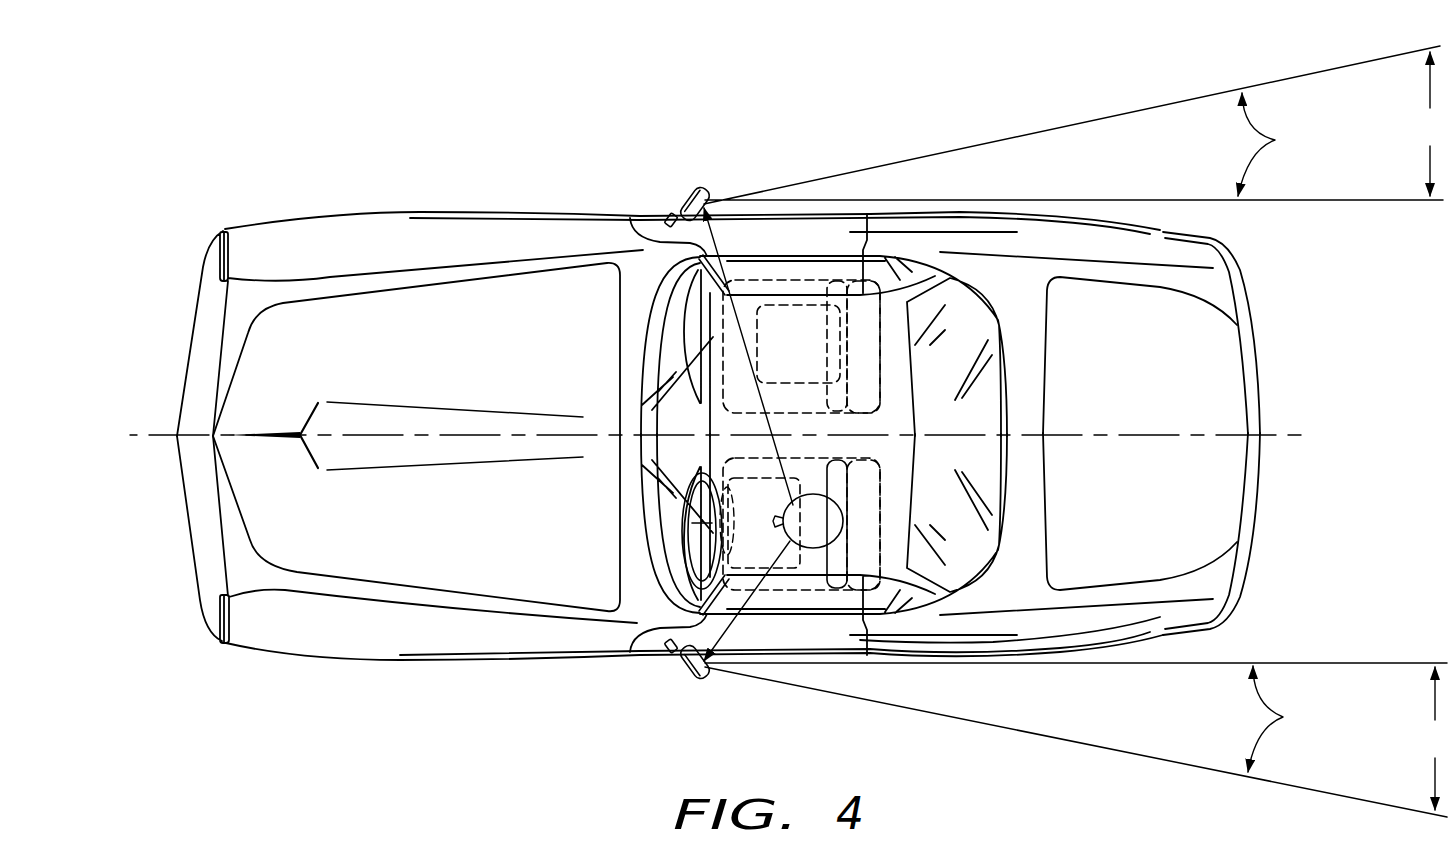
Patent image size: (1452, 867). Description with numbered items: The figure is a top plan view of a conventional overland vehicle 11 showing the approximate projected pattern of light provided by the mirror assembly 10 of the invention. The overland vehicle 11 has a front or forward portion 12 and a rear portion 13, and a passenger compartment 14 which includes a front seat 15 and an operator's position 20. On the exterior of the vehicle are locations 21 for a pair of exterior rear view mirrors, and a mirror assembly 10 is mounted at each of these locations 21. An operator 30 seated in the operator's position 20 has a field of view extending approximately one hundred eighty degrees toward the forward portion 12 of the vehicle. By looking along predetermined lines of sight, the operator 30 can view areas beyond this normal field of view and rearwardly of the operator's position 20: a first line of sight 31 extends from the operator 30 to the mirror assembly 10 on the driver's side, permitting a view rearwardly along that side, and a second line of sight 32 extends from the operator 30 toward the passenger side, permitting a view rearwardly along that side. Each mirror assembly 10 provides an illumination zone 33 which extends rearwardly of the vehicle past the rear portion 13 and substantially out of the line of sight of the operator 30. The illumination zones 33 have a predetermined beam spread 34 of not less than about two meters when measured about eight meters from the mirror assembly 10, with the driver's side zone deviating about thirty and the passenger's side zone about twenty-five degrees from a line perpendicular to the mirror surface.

The mirror assembly 10 is at (693, 183).
The overland vehicle 11 is at (522, 173).
The front or forward portion 12 is at (373, 533).
The rear portion 13 is at (1129, 513).
The passenger compartment 14 is at (862, 352).
The front seat 15 is at (861, 476).
The operator's position 20 is at (762, 536).
The locations for exterior rear view mirrors 21 is at (677, 187).
The operator 30 is at (818, 521).
The first line of sight 31 is at (723, 617).
The second line of sight 32 is at (760, 397).
The illumination zones 33 is at (1292, 717).
The beam spread 34 is at (1432, 431).